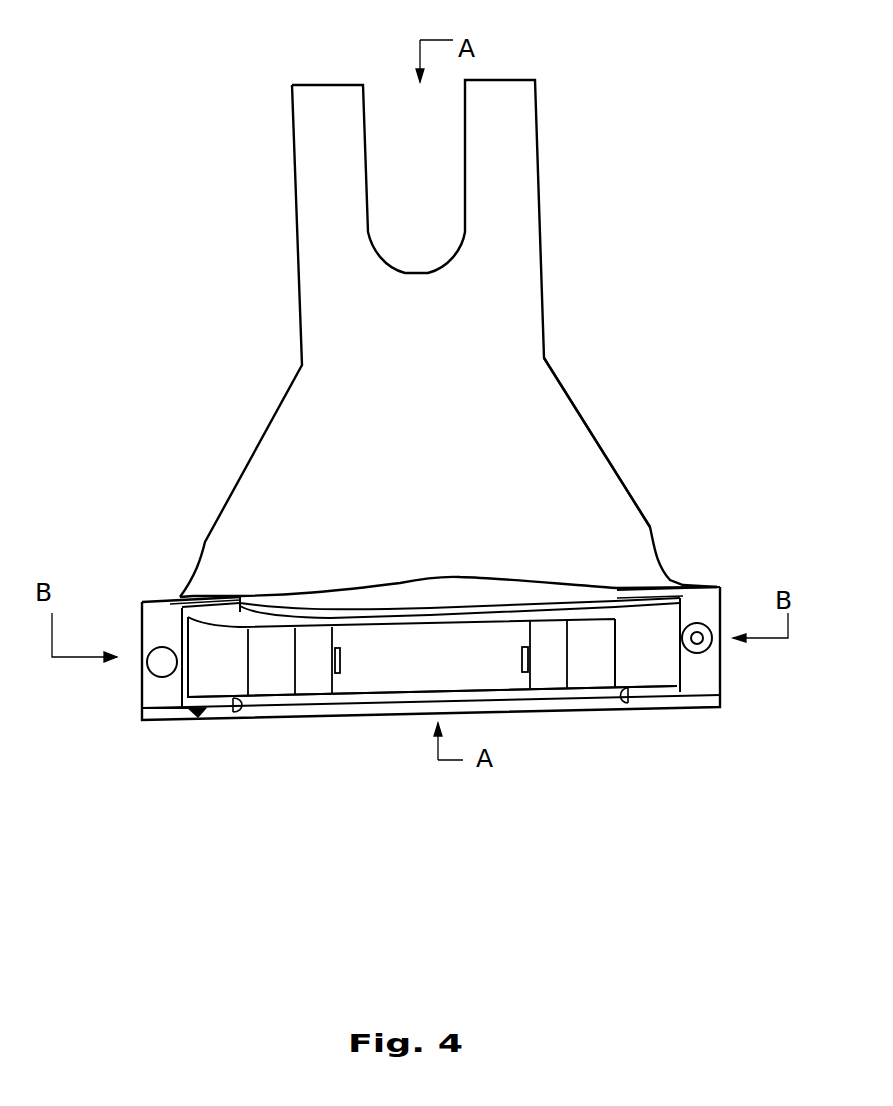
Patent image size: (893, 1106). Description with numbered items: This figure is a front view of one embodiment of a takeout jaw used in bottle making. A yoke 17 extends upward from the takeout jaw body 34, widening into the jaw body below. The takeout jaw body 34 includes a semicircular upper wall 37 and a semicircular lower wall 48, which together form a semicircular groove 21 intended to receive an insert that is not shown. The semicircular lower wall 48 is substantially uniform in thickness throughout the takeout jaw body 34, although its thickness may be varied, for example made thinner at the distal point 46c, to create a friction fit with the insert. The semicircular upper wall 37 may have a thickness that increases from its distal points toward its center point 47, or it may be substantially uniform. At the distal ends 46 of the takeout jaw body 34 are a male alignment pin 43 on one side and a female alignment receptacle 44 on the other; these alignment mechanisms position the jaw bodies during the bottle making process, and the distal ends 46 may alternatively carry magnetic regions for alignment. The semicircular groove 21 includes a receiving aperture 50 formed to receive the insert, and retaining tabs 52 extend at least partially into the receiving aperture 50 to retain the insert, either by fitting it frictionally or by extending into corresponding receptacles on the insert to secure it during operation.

The yoke 17 is at (520, 217).
The semicircular groove 21 is at (650, 663).
The takeout jaw body 34 is at (650, 522).
The semicircular upper wall 37 is at (373, 597).
The male alignment pin 43 is at (713, 650).
The female alignment receptacle 44 is at (160, 663).
The distal ends 46 is at (177, 612).
The distal point 46c is at (195, 712).
The center point 47 is at (425, 577).
The semicircular lower wall 48 is at (277, 713).
The receiving aperture 50 is at (492, 680).
The retaining tabs 52 is at (345, 668).